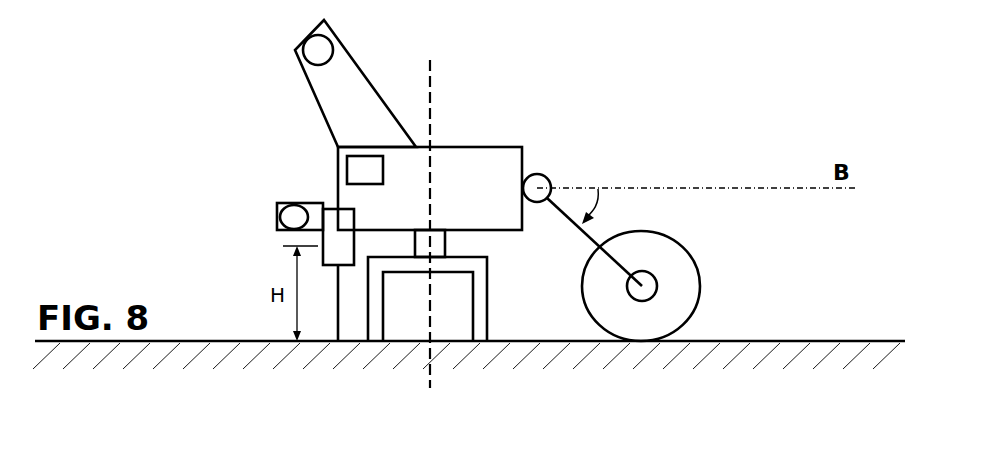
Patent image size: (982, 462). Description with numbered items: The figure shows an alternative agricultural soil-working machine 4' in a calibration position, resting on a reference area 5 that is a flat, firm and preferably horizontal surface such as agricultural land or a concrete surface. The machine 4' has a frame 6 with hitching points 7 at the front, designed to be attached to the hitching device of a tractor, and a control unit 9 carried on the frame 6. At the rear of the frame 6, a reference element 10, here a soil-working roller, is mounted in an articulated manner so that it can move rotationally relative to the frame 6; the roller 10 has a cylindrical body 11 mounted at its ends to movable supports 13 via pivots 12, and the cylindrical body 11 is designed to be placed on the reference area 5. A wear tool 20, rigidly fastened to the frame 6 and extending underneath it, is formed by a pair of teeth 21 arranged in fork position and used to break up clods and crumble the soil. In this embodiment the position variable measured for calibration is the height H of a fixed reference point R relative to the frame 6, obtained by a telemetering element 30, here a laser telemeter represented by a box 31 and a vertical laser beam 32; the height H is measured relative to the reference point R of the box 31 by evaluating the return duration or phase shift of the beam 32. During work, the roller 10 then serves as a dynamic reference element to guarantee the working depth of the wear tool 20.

The agricultural machine 4' is at (471, 197).
The reference area 5 is at (812, 341).
The frame 6 is at (473, 147).
The hitching points 7 is at (318, 51).
The control unit 9 is at (347, 172).
The reference element 10 is at (710, 262).
The cylindrical body 11 is at (685, 285).
The pivots 12 is at (632, 293).
The supports 13 is at (588, 240).
The wear tool 20 is at (492, 252).
The teeth 21 is at (488, 312).
The telemetering element 30 is at (330, 199).
The box 31 is at (320, 264).
The beam 32 is at (337, 320).